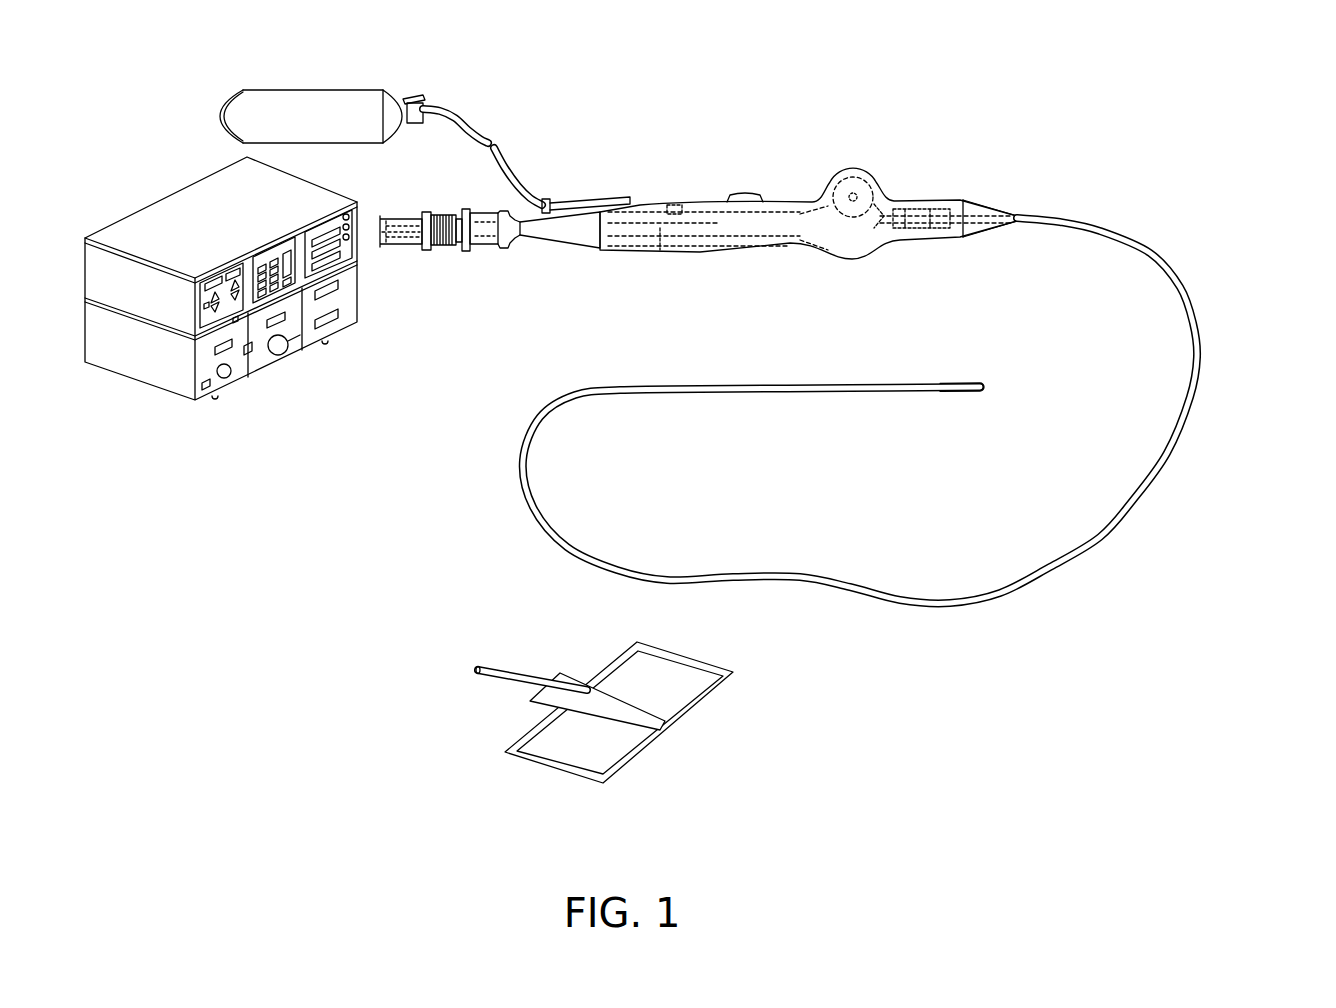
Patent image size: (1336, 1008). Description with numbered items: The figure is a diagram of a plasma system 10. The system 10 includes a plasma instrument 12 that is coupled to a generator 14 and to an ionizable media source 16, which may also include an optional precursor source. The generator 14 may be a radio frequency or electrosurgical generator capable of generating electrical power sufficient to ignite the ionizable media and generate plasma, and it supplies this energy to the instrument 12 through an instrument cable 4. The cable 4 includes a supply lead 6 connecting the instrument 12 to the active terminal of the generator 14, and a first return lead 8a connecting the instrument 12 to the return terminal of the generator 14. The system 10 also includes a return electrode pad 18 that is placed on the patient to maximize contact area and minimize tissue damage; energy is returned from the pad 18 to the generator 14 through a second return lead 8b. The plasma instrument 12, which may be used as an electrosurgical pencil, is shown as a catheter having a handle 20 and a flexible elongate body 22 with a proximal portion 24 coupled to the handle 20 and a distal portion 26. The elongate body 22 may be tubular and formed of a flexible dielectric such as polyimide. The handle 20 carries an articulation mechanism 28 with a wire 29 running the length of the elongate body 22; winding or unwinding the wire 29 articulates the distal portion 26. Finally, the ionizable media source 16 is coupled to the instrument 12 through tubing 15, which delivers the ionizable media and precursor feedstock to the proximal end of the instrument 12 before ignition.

The instrument cable 4 is at (383, 240).
The supply lead 6 is at (412, 220).
The first return lead 8a is at (398, 244).
The second return lead 8b is at (510, 672).
The plasma system 10 is at (721, 81).
The plasma instrument 12 is at (904, 165).
The generator 14 is at (186, 169).
The tubing 15 is at (478, 130).
The ionizable media source 16 is at (320, 88).
The return electrode pad 18 is at (557, 774).
The handle 20 is at (695, 198).
The flexible elongate body 22 is at (1198, 332).
The proximal portion 24 is at (1034, 214).
The distal portion 26 is at (905, 383).
The articulation mechanism 28 is at (851, 172).
The wire 29 is at (880, 192).